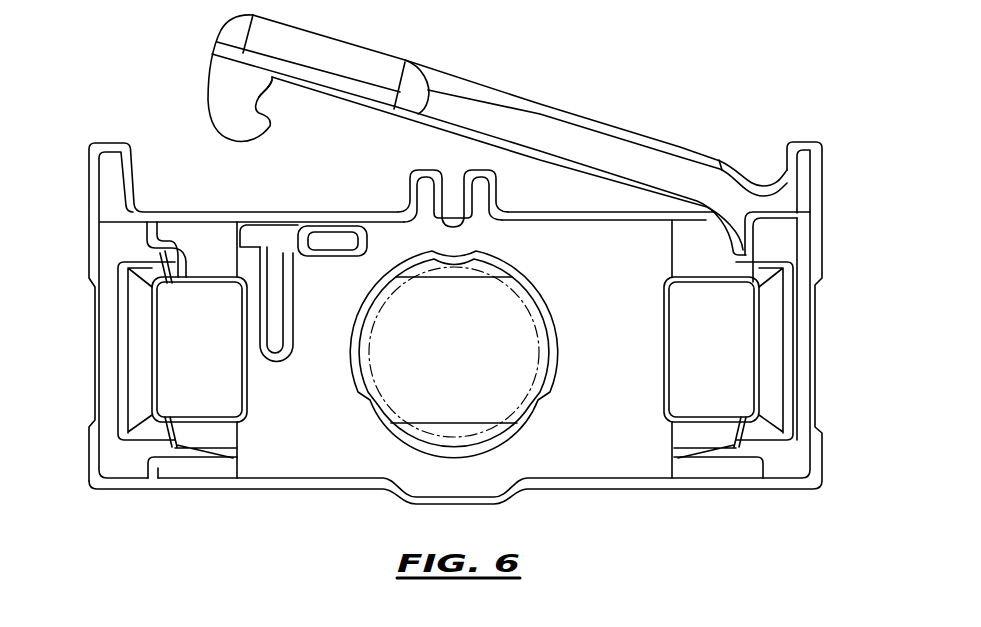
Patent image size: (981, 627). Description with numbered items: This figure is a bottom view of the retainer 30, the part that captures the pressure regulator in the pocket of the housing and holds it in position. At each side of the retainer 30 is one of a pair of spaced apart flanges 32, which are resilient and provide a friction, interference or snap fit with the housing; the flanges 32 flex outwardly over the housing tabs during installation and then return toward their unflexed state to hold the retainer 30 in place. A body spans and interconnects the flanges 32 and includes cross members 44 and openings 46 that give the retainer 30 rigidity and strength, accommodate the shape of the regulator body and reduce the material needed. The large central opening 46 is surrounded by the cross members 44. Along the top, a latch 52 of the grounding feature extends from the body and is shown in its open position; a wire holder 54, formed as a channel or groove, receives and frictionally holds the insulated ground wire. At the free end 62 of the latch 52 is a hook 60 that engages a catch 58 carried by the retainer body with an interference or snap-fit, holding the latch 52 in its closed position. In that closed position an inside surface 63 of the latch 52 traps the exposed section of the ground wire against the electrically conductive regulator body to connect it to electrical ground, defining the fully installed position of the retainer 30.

The retainer 30 is at (781, 131).
The flanges 32 is at (138, 372).
The cross members 44 is at (635, 350).
The openings 46 is at (503, 320).
The latch 52 is at (547, 123).
The wire holder 54 is at (482, 192).
The catch 58 is at (253, 247).
The hook 60 is at (262, 99).
The free end 62 is at (228, 44).
The inside surface 63 is at (462, 138).